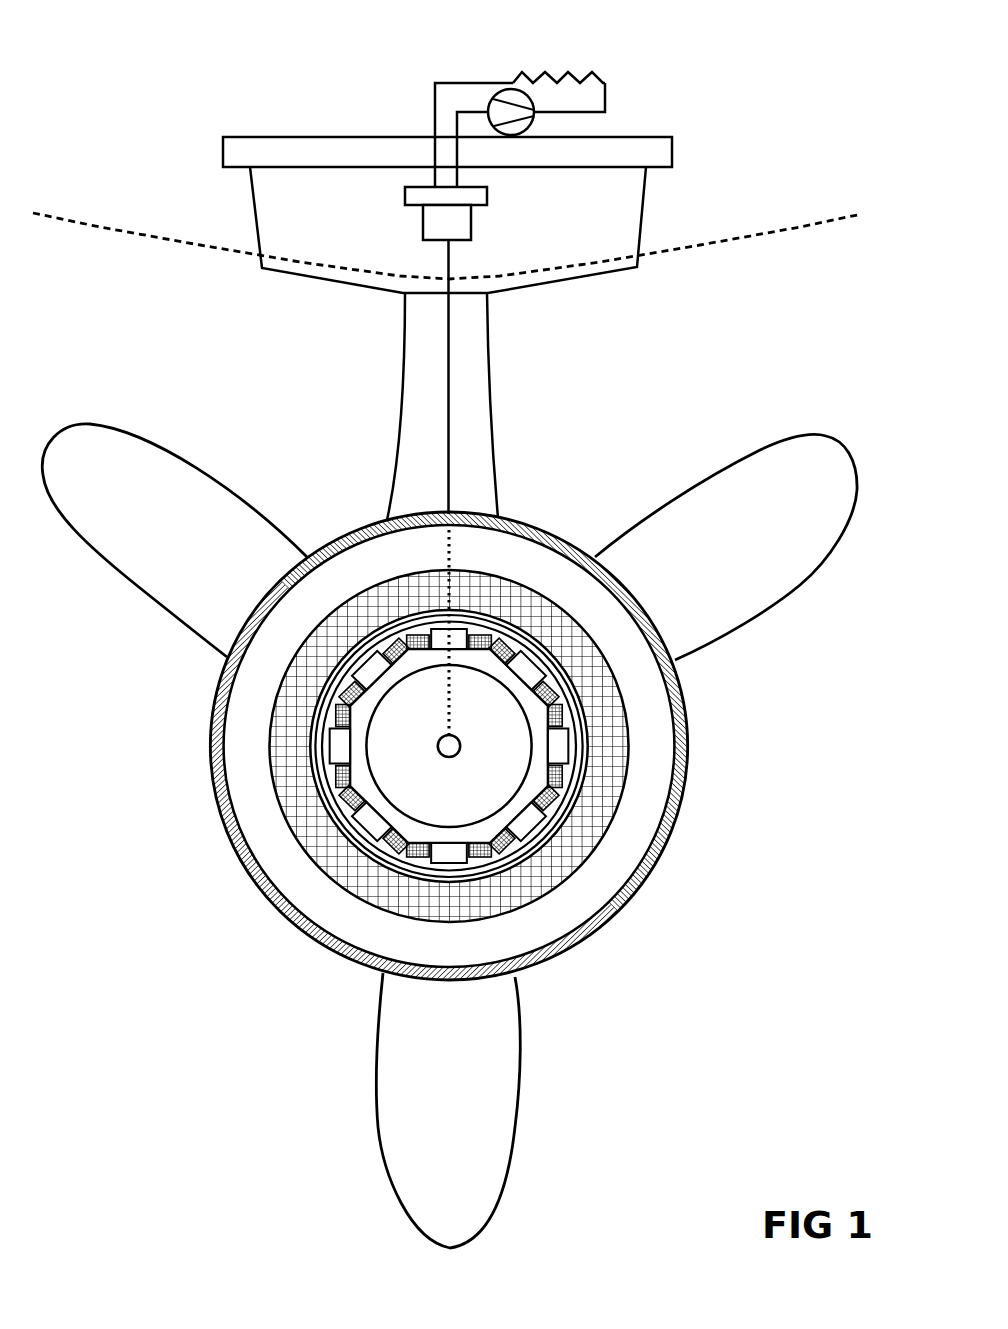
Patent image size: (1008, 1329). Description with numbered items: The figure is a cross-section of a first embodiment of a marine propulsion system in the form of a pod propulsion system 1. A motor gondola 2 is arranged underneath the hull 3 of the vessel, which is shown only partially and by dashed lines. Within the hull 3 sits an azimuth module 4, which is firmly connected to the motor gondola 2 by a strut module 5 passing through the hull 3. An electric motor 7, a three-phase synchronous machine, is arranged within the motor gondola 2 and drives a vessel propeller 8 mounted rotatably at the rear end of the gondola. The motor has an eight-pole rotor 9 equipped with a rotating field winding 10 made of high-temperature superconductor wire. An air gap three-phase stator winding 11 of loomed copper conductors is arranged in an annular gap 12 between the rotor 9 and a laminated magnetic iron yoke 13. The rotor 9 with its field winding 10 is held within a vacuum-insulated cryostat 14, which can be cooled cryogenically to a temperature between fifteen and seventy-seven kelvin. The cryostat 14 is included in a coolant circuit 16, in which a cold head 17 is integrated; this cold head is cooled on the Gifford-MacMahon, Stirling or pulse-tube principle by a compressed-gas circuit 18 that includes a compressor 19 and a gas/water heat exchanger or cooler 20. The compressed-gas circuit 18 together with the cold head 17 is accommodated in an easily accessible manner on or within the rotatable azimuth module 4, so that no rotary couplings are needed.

The pod propulsion system 1 is at (664, 425).
The motor gondola 2 is at (676, 871).
The hull of the vessel 3 is at (108, 222).
The azimuth module 4 is at (654, 234).
The strut module 5 is at (504, 417).
The electric motor 7 is at (667, 768).
The vessel propeller 8 is at (798, 437).
The 8-pole rotor 9 is at (380, 830).
The rotating field winding 10 is at (590, 710).
The stator winding 11 is at (560, 857).
The annular gap 12 is at (580, 800).
The laminated magnetic iron yoke 13 is at (345, 917).
The cryostat 14 is at (513, 863).
The coolant circuit 16 is at (447, 408).
The cold head 17 is at (472, 226).
The compressed-gas circuit 18 is at (422, 115).
The compressor 19 is at (490, 101).
The gas/water heat exchanger or cooler 20 is at (579, 75).